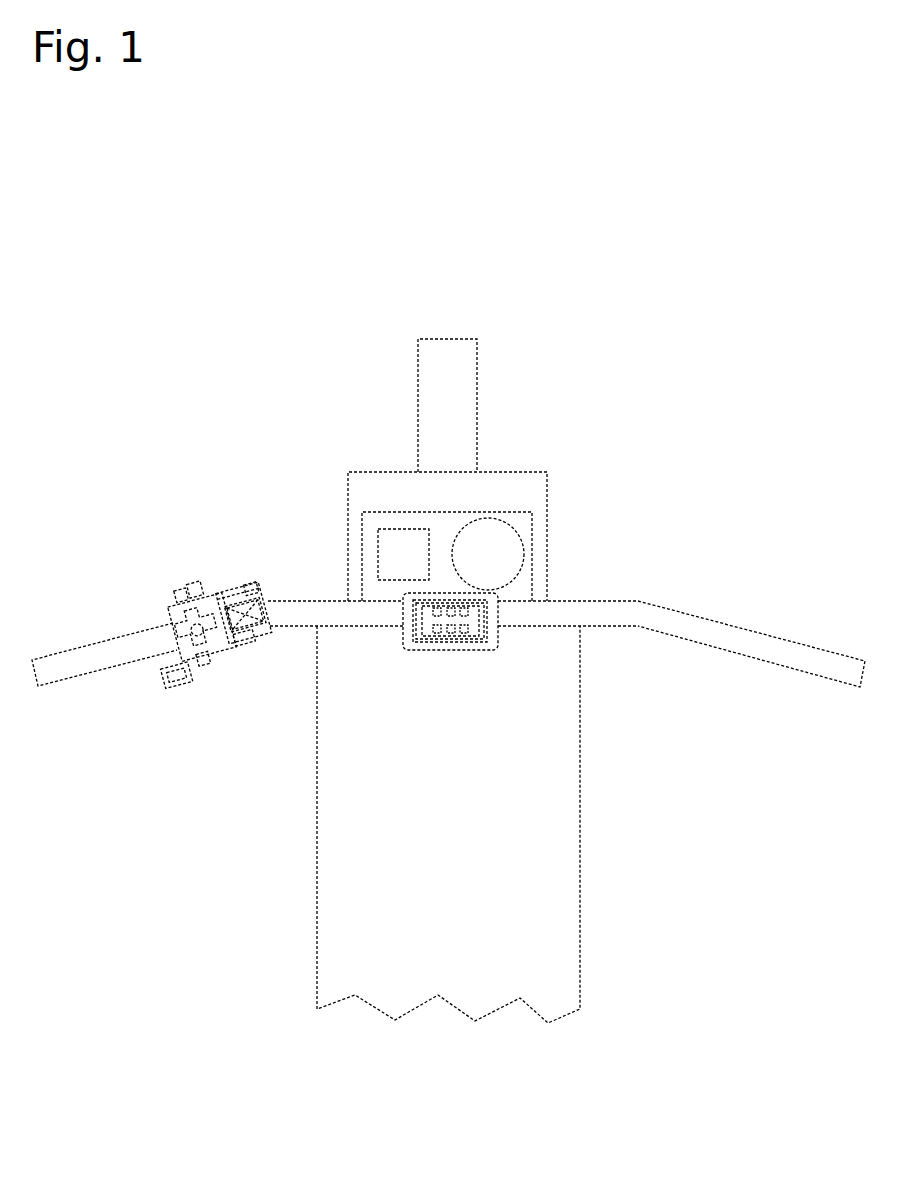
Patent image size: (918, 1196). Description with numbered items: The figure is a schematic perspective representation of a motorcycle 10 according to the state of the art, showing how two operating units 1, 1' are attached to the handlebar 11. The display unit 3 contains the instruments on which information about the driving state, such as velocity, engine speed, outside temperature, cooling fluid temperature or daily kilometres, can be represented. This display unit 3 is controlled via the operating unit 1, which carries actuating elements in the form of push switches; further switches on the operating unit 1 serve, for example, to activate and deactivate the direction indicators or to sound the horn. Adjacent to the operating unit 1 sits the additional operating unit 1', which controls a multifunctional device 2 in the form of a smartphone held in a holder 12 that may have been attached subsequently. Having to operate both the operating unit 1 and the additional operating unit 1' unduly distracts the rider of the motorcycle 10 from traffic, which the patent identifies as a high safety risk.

The motorcycle 10 is at (271, 449).
The operating unit 1 is at (244, 582).
The additional operating unit 1' is at (172, 617).
The multifunctional device 2 is at (457, 620).
The display unit 3 is at (492, 545).
The handlebar 11 is at (103, 657).
The holder 12 is at (407, 630).